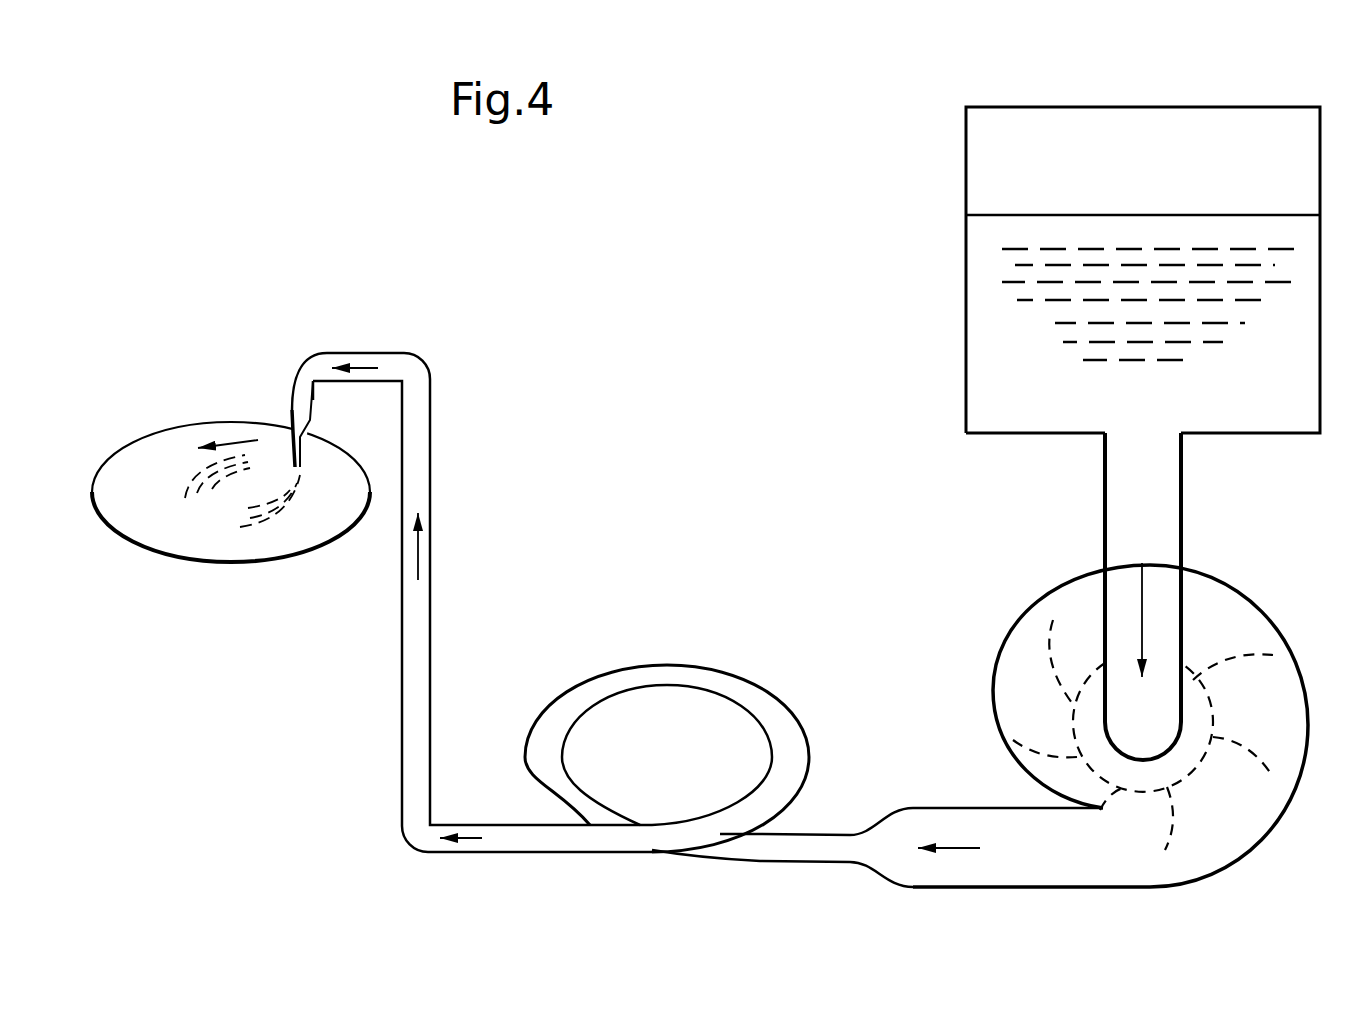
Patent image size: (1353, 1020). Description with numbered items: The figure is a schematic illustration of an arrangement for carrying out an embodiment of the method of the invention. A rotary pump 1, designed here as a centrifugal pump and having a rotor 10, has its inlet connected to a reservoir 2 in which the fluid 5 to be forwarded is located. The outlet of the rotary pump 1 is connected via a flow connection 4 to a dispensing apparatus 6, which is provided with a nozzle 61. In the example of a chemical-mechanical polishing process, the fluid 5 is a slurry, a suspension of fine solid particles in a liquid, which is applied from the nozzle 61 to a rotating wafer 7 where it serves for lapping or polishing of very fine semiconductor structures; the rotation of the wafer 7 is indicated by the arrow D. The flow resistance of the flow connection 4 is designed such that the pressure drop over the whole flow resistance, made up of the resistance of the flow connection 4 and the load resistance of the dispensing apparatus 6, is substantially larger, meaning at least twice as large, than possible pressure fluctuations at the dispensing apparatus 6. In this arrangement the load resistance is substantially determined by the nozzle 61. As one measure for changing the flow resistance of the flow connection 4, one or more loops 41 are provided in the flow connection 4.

The rotary pump 1 is at (1015, 615).
The reservoir 2 is at (1103, 106).
The flow connection 4 is at (850, 803).
The fluid 5 is at (985, 297).
The dispensing apparatus 6 is at (308, 373).
The wafer 7 is at (198, 533).
The rotor 10 is at (1208, 700).
The loop 41 is at (733, 675).
The nozzle 61 is at (293, 453).
The arrow indicating rotation of the wafer D is at (230, 440).